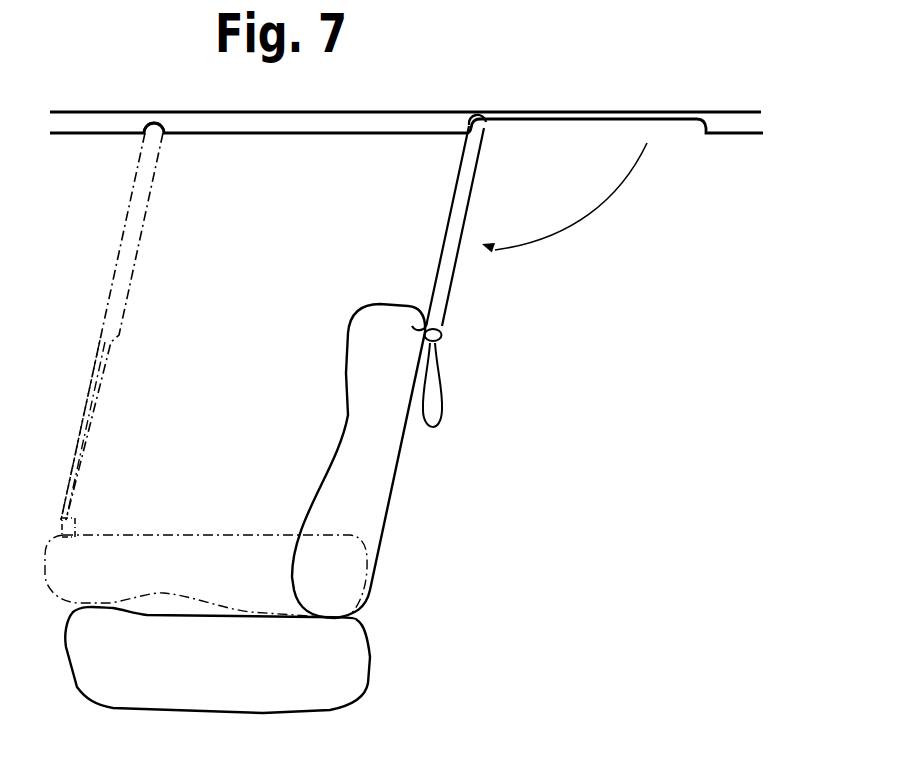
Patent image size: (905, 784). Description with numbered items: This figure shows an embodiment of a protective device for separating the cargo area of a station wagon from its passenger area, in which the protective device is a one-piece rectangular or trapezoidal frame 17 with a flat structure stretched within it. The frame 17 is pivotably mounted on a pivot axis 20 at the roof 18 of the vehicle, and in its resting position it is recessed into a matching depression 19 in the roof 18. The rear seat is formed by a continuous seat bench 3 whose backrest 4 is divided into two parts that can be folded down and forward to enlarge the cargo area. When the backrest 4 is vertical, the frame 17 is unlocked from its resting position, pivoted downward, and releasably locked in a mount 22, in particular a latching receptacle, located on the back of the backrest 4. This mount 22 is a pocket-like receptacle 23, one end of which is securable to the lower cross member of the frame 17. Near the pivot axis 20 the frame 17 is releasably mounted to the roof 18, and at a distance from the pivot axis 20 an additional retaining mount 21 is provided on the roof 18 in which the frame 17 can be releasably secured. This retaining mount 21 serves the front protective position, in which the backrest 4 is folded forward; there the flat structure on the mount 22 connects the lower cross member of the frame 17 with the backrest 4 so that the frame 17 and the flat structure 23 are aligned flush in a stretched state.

The seat bench 3 is at (205, 694).
The backrest 4 is at (350, 417).
The frame 17 is at (140, 208).
The roof 18 is at (303, 125).
The depression 19 is at (565, 125).
The pivot axis 20 is at (485, 120).
The retaining mount 21 is at (172, 142).
The mount 22 is at (424, 305).
The pocket-like receptacle 23 is at (442, 403).